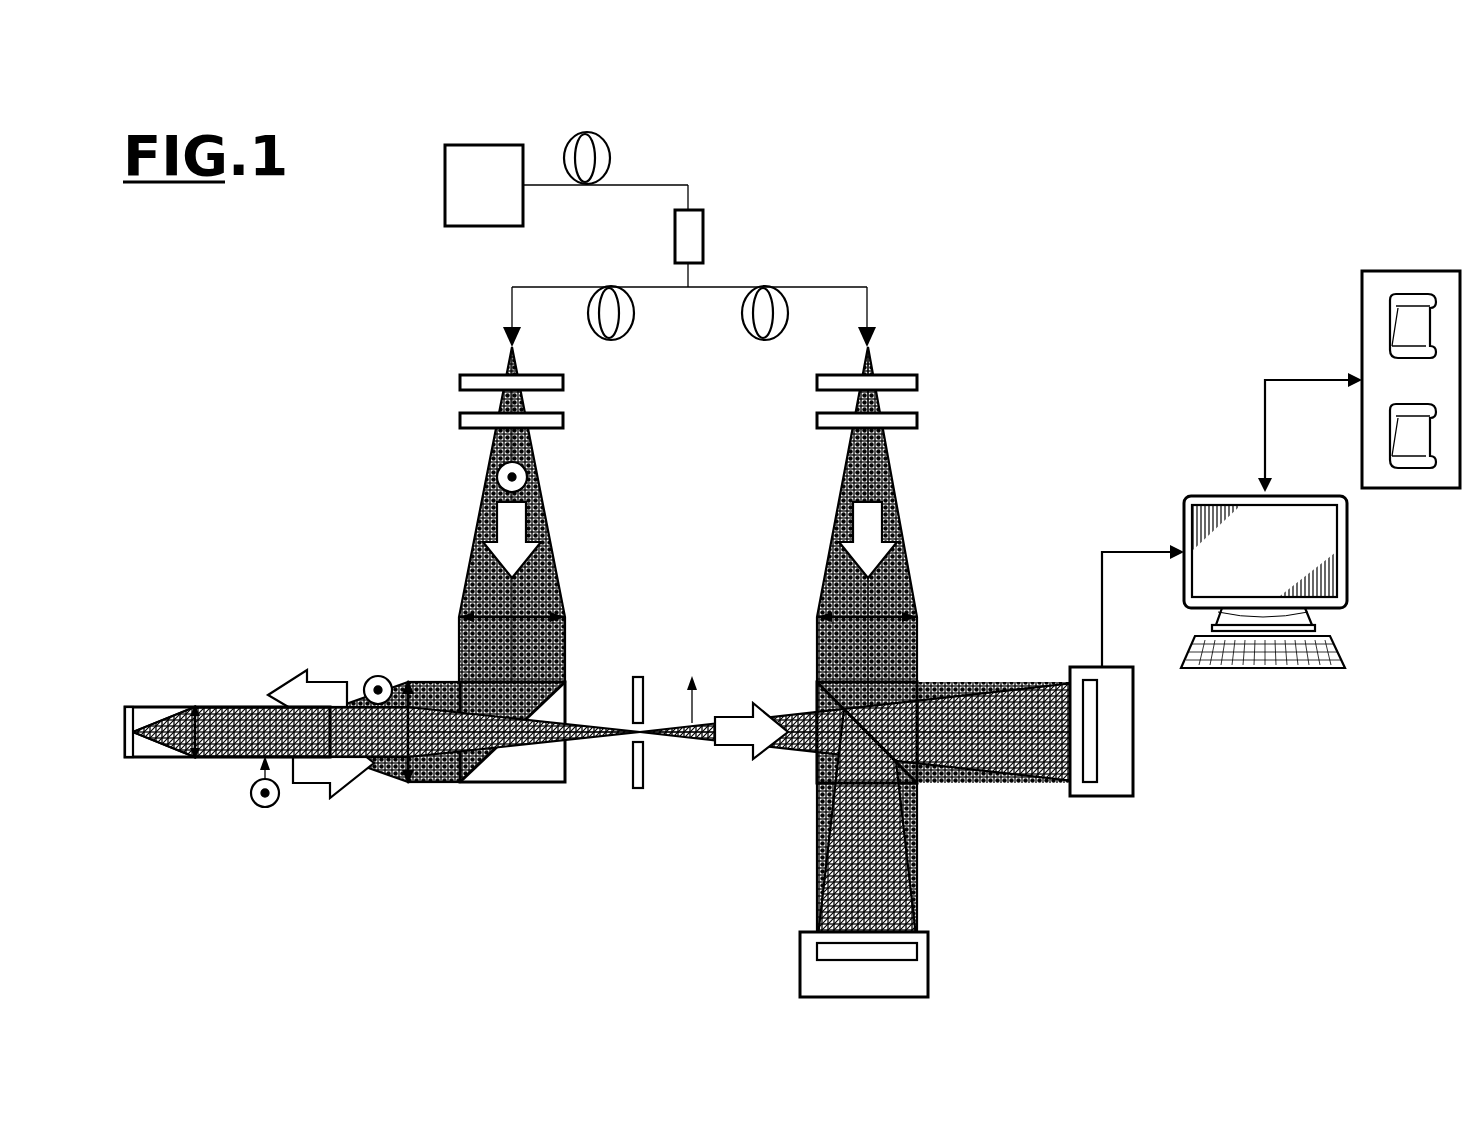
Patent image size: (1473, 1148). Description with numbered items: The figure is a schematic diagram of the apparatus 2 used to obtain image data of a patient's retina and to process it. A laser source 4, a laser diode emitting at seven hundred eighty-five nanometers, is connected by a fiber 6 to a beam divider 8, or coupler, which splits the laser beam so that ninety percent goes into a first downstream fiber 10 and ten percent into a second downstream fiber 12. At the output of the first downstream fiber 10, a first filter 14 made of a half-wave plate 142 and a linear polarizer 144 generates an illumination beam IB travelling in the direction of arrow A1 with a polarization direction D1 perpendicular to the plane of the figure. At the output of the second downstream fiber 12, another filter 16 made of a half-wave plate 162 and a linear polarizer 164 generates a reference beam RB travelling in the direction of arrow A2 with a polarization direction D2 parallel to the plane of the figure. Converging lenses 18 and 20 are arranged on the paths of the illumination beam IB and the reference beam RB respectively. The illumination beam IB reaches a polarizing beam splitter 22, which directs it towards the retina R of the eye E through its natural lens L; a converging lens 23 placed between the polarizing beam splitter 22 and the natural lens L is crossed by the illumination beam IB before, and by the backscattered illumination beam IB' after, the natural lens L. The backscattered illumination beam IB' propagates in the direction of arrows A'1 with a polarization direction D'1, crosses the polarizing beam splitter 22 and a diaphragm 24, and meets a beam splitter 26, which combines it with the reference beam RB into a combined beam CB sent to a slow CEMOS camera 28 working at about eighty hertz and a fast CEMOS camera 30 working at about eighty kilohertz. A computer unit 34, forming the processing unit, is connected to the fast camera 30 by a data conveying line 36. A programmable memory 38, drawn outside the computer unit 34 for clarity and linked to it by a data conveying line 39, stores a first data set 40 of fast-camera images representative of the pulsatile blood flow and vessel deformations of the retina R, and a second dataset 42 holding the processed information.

The apparatus 2 is at (1120, 246).
The laser source 4 is at (491, 202).
The fiber 6 is at (657, 185).
The beam divider 8 is at (696, 250).
The first downstream fiber 10 is at (547, 287).
The second downstream fiber 12 is at (827, 287).
The first filter 14 is at (362, 358).
The half-wave plate 142 is at (465, 381).
The linear polarizer 144 is at (465, 419).
The filter 16 is at (1008, 358).
The half-wave plate 162 is at (912, 381).
The linear polarizer 164 is at (912, 419).
The converging lens 18 is at (520, 617).
The converging lens 20 is at (880, 617).
The polarizing beam splitter 22 is at (550, 763).
The converging lens 23 is at (392, 760).
The diaphragm 24 is at (637, 790).
The beam splitter 26 is at (813, 768).
The slow CEMOS camera 28 is at (930, 963).
The fast CEMOS camera 30 is at (1101, 797).
The computer unit 34 is at (1275, 565).
The data conveying line 36 is at (1100, 612).
The programmable memory 38 is at (1412, 268).
The data conveying line 39 is at (1264, 424).
The first data set 40 is at (1413, 326).
The second dataset 42 is at (1413, 436).
The illumination beam IB is at (491, 539).
The backscattered illumination beam IB' is at (306, 756).
The reference beam RB is at (830, 590).
The combined beam CB is at (965, 782).
The arrow A1 is at (528, 512).
The arrows A'1 is at (528, 785).
The arrow A2 is at (884, 512).
The polarization direction D1 is at (497, 477).
The polarization direction D'1 is at (250, 807).
The polarization direction D2 is at (834, 463).
The natural lens L is at (212, 705).
The retina R is at (126, 728).
The eye E is at (210, 770).